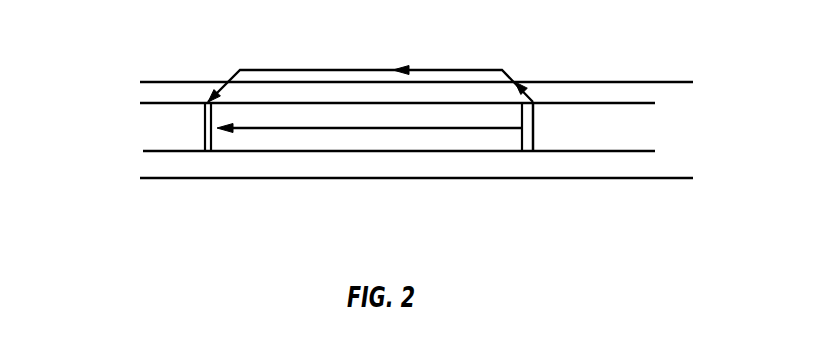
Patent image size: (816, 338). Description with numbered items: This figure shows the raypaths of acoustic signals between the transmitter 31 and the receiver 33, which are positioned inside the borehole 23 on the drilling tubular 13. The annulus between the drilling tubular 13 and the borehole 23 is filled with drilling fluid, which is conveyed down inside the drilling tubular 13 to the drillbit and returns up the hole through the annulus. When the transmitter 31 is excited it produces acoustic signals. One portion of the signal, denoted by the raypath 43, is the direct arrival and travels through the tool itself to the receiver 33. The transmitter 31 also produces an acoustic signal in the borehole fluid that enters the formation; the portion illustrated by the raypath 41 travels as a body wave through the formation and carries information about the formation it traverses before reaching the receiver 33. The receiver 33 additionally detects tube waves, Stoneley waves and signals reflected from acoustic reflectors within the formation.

The drilling tubular 13 is at (382, 160).
The borehole 23 is at (416, 172).
The receiver 33 is at (182, 170).
The transmitter 31 is at (556, 158).
The raypath 41 is at (370, 62).
The raypath 43 is at (369, 172).